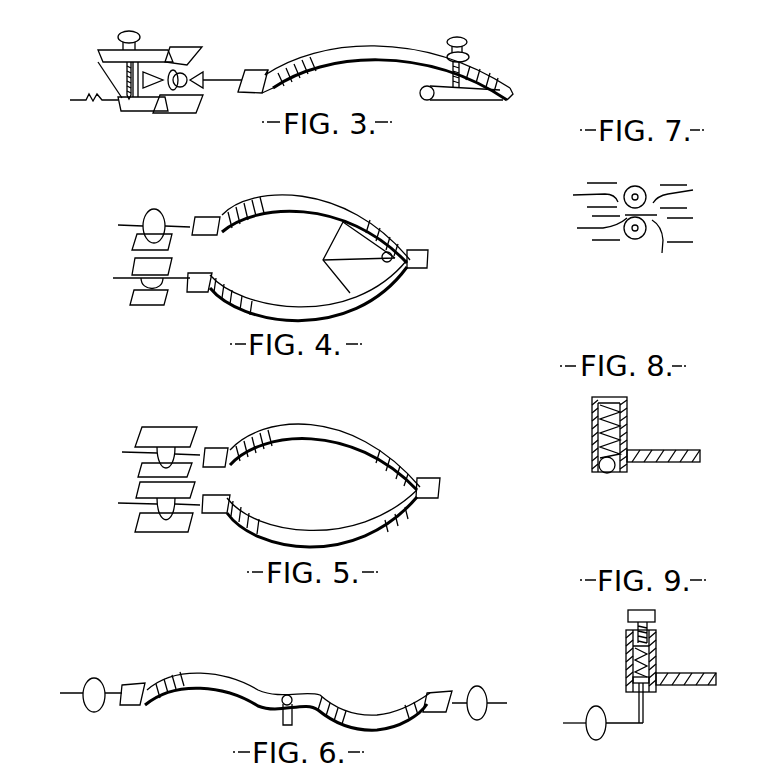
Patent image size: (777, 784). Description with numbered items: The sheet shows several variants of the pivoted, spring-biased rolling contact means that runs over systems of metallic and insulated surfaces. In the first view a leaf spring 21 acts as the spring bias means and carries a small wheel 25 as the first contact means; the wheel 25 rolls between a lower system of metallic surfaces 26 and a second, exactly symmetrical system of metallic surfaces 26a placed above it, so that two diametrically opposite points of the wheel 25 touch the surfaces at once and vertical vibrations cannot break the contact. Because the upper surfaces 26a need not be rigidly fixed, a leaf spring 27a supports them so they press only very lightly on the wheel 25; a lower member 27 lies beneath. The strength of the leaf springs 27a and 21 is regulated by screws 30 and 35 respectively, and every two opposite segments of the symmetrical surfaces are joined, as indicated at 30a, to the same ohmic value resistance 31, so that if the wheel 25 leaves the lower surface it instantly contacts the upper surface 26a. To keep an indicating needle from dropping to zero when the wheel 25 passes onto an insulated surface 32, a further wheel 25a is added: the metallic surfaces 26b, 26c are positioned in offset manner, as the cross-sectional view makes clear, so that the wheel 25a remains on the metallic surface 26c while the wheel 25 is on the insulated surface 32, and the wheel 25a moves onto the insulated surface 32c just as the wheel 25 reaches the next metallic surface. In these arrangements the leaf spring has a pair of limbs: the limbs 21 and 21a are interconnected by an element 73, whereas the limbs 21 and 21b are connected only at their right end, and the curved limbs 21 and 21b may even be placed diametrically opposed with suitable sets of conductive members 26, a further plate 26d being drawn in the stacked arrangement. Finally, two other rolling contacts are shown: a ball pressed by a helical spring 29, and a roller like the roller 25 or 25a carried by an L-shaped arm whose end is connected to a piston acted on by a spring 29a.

In FIG. 4, the leaf spring 21 is at (295, 303).
In FIG. 5, the leaf spring 21 is at (320, 523).
In FIG. 6, the leaf spring 21 is at (208, 687).
In FIG. 4, the limb 21a is at (305, 215).
In FIG. 5, the limb 21b is at (337, 445).
In FIG. 6, the limb 21b is at (357, 707).
In FIG. 7, the wheel 25 is at (627, 240).
In FIG. 4, the further wheel 25a is at (160, 210).
In FIG. 5, the further wheel 25a is at (148, 462).
In FIG. 6, the further wheel 25a is at (473, 720).
In FIG. 7, the further wheel 25a is at (652, 192).
In FIG. 3, the metallic surfaces 26 is at (197, 113).
In FIG. 4, the metallic surfaces 26 is at (130, 297).
In FIG. 5, the metallic surfaces 26 is at (140, 525).
In FIG. 3, the second system of metallic surfaces 26a is at (187, 52).
In FIG. 4, the metallic surfaces 26b is at (135, 260).
In FIG. 5, the metallic surfaces 26b is at (142, 500).
In FIG. 7, the metallic surfaces 26b is at (672, 250).
In FIG. 4, the metallic surfaces 26c is at (135, 243).
In FIG. 5, the metallic surfaces 26c is at (142, 472).
In FIG. 7, the metallic surfaces 26c is at (693, 194).
In FIG. 5, the top plate 26d is at (148, 430).
In FIG. 3, the lower bracket plate 27 is at (140, 103).
In FIG. 3, the leaf spring 27a is at (153, 53).
In FIG. 8, the spring 29 is at (618, 427).
In FIG. 9, the spring 29a is at (650, 658).
In FIG. 3, the screw 30 is at (120, 32).
In FIG. 3, the connection 30a is at (98, 62).
In FIG. 3, the resistance 31 is at (92, 107).
In FIG. 7, the insulated surface 32 is at (604, 228).
In FIG. 7, the insulated surface 32c is at (575, 194).
In FIG. 3, the screw 35 is at (465, 42).
In FIG. 4, the element 73 is at (347, 280).